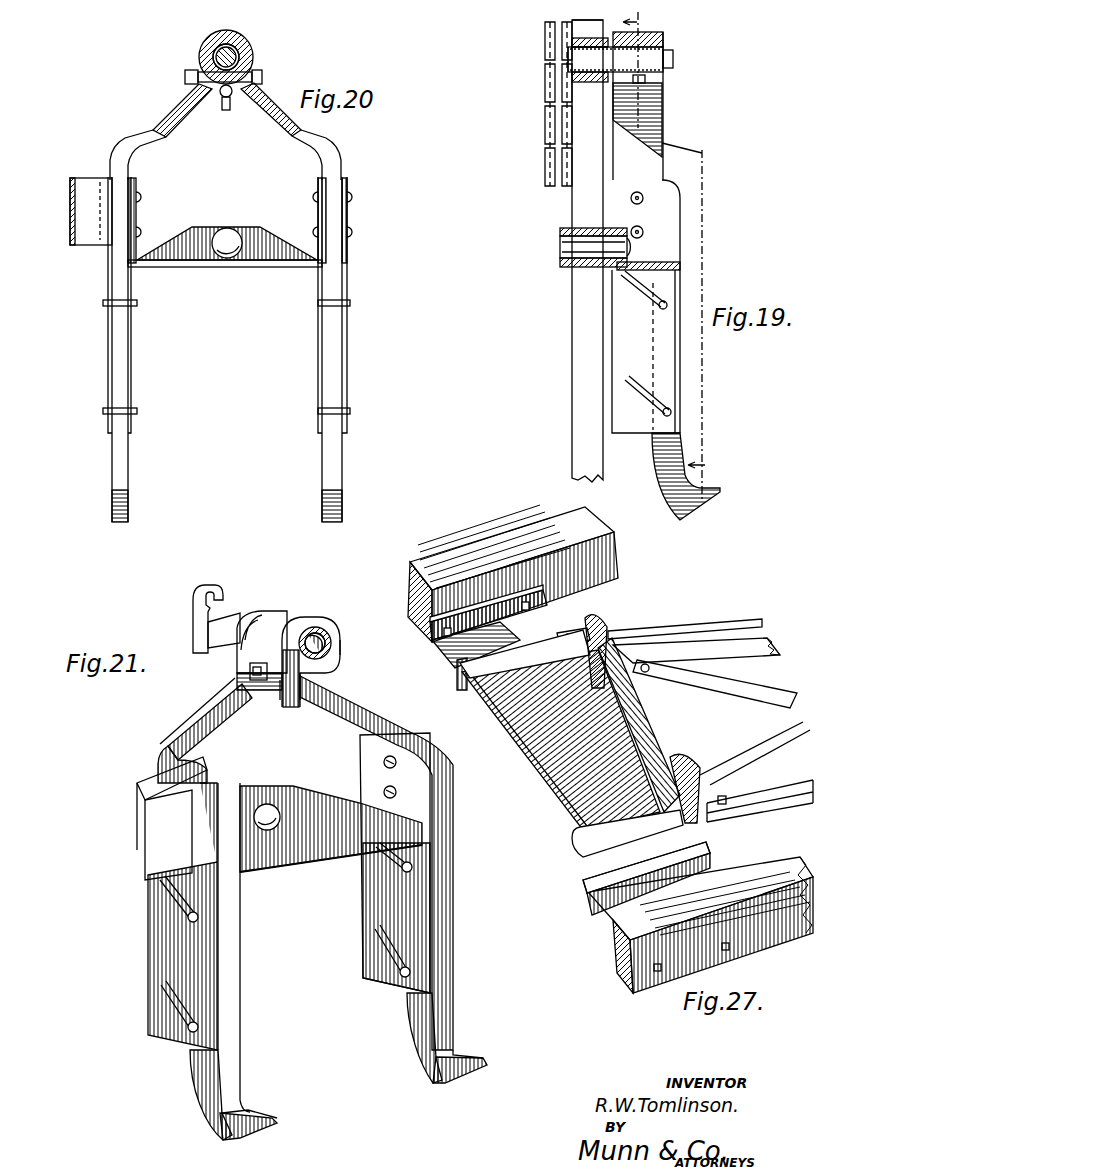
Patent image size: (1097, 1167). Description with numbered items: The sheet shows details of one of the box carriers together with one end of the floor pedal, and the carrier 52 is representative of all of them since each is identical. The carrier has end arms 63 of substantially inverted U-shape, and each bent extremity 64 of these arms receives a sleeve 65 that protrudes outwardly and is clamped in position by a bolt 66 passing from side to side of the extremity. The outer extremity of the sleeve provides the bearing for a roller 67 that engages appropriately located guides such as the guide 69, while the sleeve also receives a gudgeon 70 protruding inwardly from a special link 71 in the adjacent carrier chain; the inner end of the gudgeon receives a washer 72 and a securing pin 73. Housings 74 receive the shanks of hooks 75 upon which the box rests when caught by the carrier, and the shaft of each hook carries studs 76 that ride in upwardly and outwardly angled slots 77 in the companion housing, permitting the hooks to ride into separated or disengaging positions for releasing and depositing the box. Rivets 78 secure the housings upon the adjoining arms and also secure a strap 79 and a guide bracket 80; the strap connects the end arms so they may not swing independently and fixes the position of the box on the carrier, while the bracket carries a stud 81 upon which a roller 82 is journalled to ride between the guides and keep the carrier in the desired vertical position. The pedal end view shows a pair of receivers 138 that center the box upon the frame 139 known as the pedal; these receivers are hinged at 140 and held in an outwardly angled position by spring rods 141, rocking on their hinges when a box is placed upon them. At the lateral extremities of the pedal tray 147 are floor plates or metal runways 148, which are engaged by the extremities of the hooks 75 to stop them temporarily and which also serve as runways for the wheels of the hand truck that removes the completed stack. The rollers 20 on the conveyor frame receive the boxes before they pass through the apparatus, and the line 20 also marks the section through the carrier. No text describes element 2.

In FIG. 27, the beam 2 is at (442, 555).
In FIG. 19, the rollers 20 is at (675, 252).
In FIG. 20, the box carrier 52 is at (138, 121).
In FIG. 19, the box carrier 52 is at (680, 131).
In FIG. 21, the box carrier 52 is at (159, 749).
In FIG. 20, the end arms 63 is at (172, 125).
In FIG. 19, the end arms 63 is at (655, 102).
In FIG. 21, the end arms 63 is at (200, 730).
In FIG. 20, the bent extremity 64 is at (205, 42).
In FIG. 19, the bent extremity 64 is at (663, 40).
In FIG. 21, the bent extremity 64 is at (280, 614).
In FIG. 20, the sleeve 65 is at (240, 46).
In FIG. 19, the sleeve 65 is at (590, 66).
In FIG. 20, the bolt 66 is at (188, 75).
In FIG. 19, the bolt 66 is at (647, 80).
In FIG. 21, the bolt 66 is at (250, 672).
In FIG. 19, the roller 67 is at (585, 84).
In FIG. 19, the guide 69 is at (582, 296).
In FIG. 20, the gudgeon 70 is at (256, 57).
In FIG. 19, the gudgeon 70 is at (572, 44).
In FIG. 21, the gudgeon 70 is at (330, 648).
In FIG. 19, the special link 71 is at (568, 58).
In FIG. 21, the special link 71 is at (192, 616).
In FIG. 19, the washer 72 is at (668, 50).
In FIG. 21, the washer 72 is at (312, 630).
In FIG. 19, the securing pin 73 is at (675, 58).
In FIG. 21, the securing pin 73 is at (322, 636).
In FIG. 20, the housing 74 is at (108, 368).
In FIG. 19, the housing 74 is at (665, 366).
In FIG. 21, the housing 74 is at (150, 963).
In FIG. 20, the hook 75 is at (124, 490).
In FIG. 19, the hook 75 is at (674, 446).
In FIG. 21, the hook 75 is at (232, 1090).
In FIG. 19, the studs 76 is at (668, 308).
In FIG. 21, the studs 76 is at (188, 918).
In FIG. 19, the angled slots 77 is at (633, 283).
In FIG. 21, the angled slots 77 is at (165, 882).
In FIG. 20, the rivets 78 is at (138, 230).
In FIG. 19, the rivets 78 is at (643, 232).
In FIG. 21, the rivets 78 is at (384, 792).
In FIG. 20, the strap 79 is at (70, 192).
In FIG. 21, the strap 79 is at (150, 840).
In FIG. 20, the guide bracket 80 is at (188, 268).
In FIG. 19, the guide bracket 80 is at (672, 265).
In FIG. 21, the guide bracket 80 is at (300, 797).
In FIG. 20, the stud 81 is at (226, 266).
In FIG. 19, the stud 81 is at (573, 245).
In FIG. 21, the stud 81 is at (270, 804).
In FIG. 19, the roller 82 is at (582, 236).
In FIG. 27, the receivers 138 is at (492, 705).
In FIG. 27, the pedal 139 is at (748, 640).
In FIG. 27, the hinge 140 is at (590, 900).
In FIG. 27, the spring rods 141 is at (680, 628).
In FIG. 27, the pedal tray 147 is at (557, 812).
In FIG. 27, the floor plates 148 is at (433, 652).